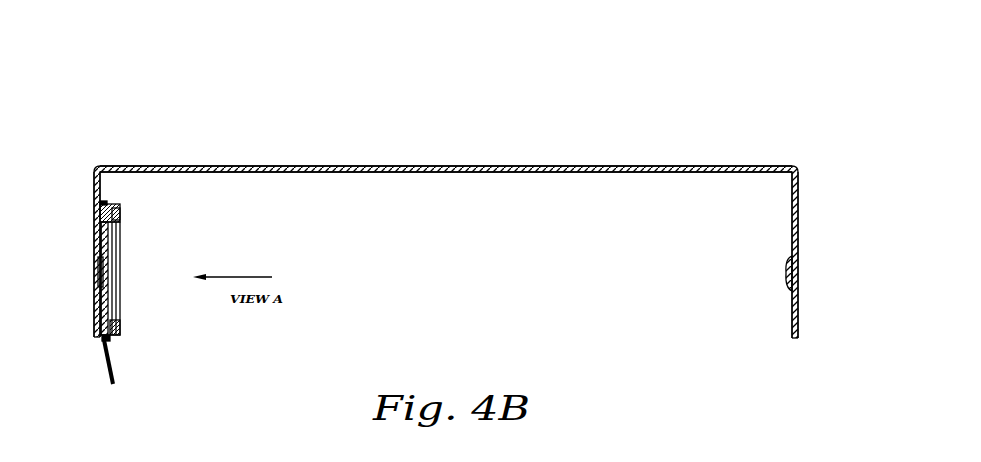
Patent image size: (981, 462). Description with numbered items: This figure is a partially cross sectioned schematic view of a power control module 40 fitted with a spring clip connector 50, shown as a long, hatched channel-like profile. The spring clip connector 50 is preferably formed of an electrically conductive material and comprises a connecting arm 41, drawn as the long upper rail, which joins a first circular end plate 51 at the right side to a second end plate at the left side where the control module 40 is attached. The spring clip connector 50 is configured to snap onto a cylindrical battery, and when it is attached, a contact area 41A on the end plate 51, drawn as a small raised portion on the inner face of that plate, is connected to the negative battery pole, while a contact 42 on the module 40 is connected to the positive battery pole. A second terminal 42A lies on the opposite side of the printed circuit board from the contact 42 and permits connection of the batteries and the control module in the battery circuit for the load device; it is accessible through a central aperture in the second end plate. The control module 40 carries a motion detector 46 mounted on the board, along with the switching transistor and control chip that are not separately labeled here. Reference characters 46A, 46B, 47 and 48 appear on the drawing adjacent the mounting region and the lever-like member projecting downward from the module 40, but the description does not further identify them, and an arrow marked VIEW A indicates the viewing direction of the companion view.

The power control module 40 is at (528, 160).
The connecting arm 41 is at (610, 165).
The contact area 41A is at (787, 273).
The contact 42 is at (110, 278).
The second terminal 42A is at (101, 275).
The motion detector 46 is at (118, 213).
The bracket tab 46A is at (104, 221).
The pivot pin 46B is at (117, 216).
The left side wall 47 is at (97, 214).
The lever 48 is at (113, 362).
The spring clip connector 50 is at (381, 160).
The first circular end plate 51 is at (798, 215).